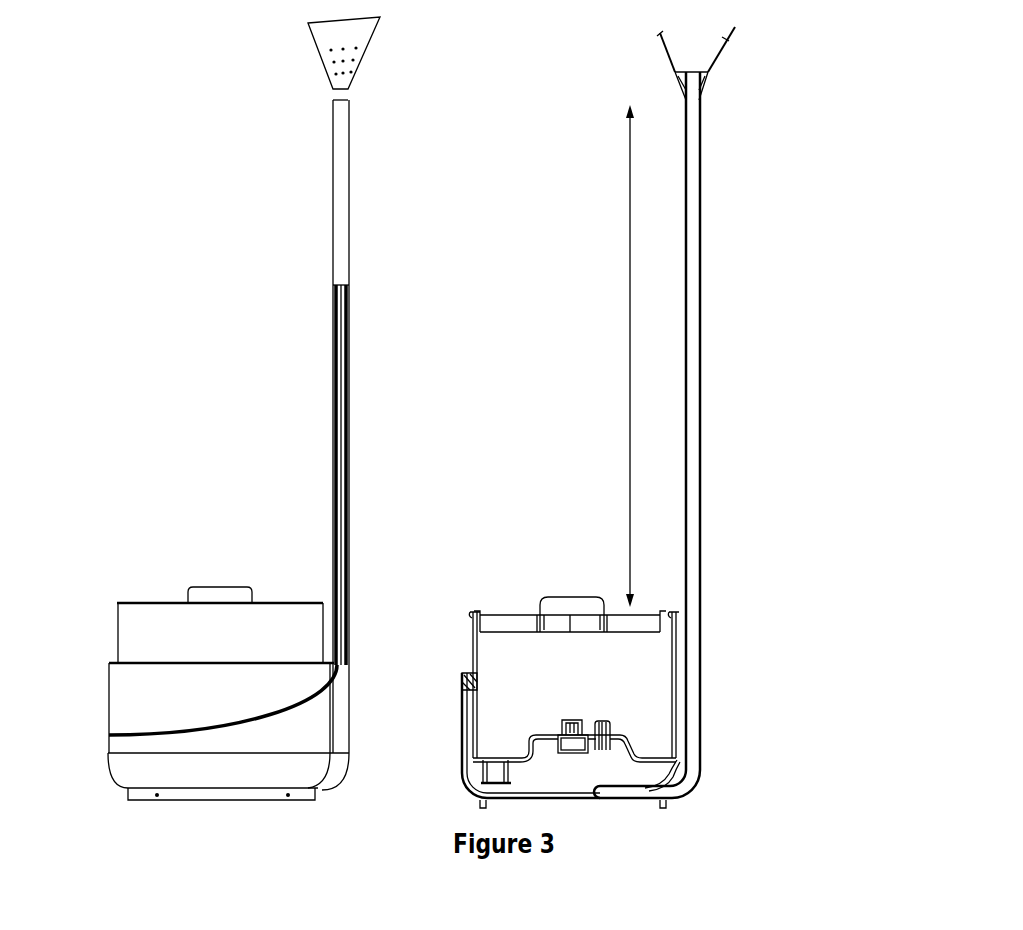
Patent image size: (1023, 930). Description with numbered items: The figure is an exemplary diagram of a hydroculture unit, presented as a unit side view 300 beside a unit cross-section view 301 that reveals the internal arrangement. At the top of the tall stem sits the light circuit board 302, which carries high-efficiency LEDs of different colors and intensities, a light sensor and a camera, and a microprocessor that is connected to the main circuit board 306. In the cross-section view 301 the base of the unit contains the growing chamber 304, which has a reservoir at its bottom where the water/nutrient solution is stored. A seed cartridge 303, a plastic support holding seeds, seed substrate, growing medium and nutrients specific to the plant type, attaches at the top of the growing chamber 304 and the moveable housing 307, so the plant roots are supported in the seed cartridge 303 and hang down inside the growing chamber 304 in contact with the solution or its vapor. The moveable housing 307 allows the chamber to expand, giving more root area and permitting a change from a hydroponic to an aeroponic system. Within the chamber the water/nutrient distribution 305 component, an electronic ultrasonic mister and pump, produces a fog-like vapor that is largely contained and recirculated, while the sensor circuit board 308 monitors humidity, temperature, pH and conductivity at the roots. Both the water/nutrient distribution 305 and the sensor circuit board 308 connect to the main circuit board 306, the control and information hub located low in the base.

The unit side view 300 is at (244, 424).
The unit cross-section view 301 is at (730, 428).
The light circuit board 302 is at (741, 40).
The seed cartridge 303 is at (645, 622).
The growing chamber 304 is at (646, 685).
The water/nutrient distribution 305 is at (579, 744).
The main circuit board 306 is at (522, 783).
The moveable housing 307 is at (681, 653).
The sensor circuit board 308 is at (617, 748).